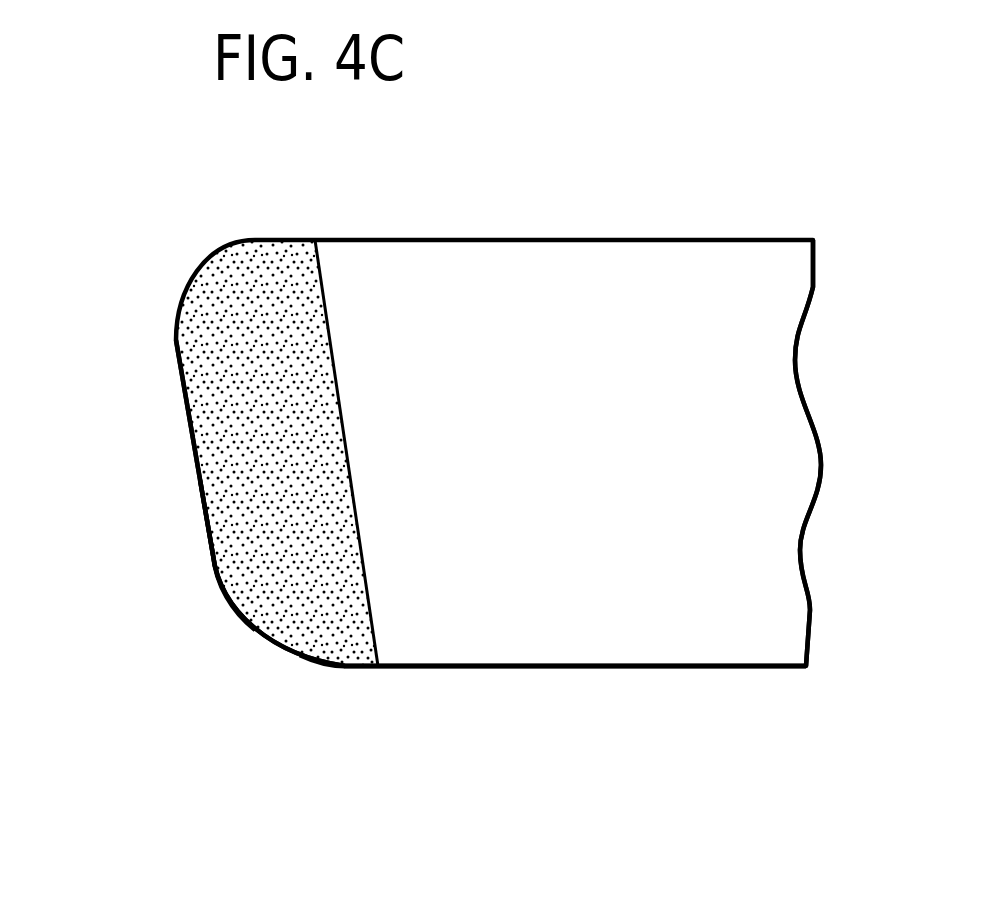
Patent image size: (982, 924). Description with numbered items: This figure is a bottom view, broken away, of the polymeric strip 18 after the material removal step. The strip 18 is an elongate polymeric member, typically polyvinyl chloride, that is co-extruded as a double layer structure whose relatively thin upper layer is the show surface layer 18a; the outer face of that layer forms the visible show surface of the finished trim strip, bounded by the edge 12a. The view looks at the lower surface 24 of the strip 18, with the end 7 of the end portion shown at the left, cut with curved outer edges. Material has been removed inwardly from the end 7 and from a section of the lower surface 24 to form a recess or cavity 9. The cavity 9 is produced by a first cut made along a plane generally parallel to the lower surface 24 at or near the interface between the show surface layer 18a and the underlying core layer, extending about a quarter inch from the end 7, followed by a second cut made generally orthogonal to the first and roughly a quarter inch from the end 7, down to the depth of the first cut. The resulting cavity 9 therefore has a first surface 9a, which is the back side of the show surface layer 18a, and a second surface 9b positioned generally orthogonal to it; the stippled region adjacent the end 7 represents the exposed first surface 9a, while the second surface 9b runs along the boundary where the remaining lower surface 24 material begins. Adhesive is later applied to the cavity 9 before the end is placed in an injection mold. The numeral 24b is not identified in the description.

The polymeric strip 18 is at (562, 208).
The show surface layer 18a is at (197, 347).
The edge of the show surface 12a is at (195, 455).
The end 7 is at (213, 553).
The first surface 9a is at (246, 597).
The cavity 9 is at (302, 623).
The second surface 9b is at (368, 628).
The lower surface 24 is at (778, 603).
The bottom surface 24b is at (633, 645).